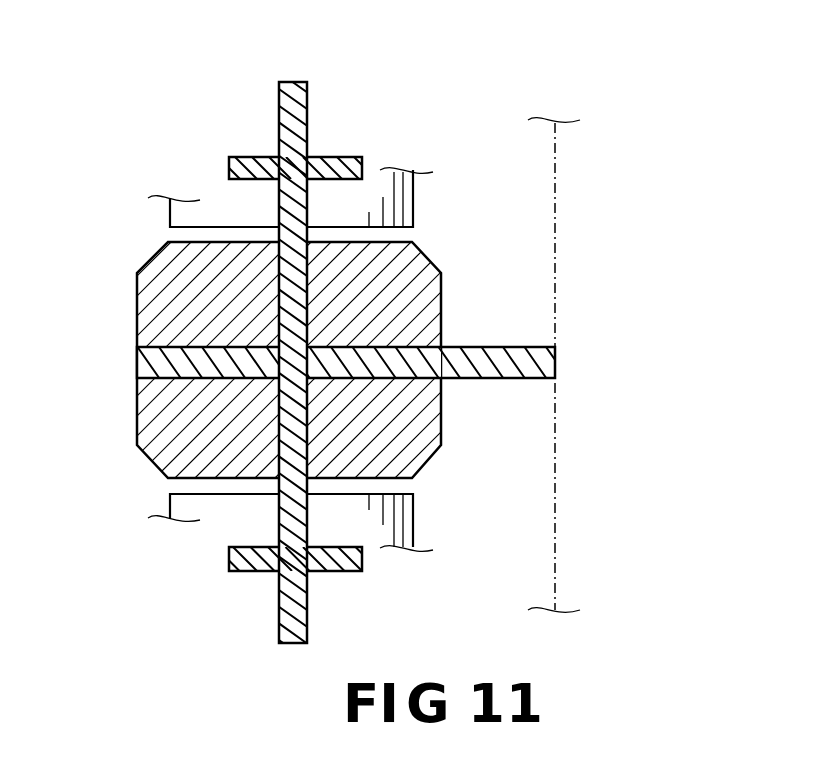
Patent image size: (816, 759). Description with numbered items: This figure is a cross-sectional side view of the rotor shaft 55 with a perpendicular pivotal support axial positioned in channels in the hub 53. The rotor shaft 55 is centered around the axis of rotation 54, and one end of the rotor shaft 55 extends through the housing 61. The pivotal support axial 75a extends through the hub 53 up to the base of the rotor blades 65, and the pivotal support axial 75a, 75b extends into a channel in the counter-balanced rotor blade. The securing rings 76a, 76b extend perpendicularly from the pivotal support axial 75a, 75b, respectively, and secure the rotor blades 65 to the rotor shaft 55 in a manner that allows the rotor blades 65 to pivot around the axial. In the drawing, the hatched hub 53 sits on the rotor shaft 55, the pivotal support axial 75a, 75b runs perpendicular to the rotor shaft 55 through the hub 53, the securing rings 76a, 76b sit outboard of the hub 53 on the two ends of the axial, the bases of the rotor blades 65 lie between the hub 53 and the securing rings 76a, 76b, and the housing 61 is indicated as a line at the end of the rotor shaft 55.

The hub 53 is at (170, 288).
The axis of rotation 54 is at (137, 353).
The rotor shaft 55 is at (503, 363).
The housing 61 is at (556, 215).
The rotor blades 65 is at (200, 212).
The pivotal support axial 75a is at (290, 82).
The pivotal support axial 75b is at (287, 646).
The securing ring 76a is at (238, 155).
The securing ring 76b is at (230, 564).